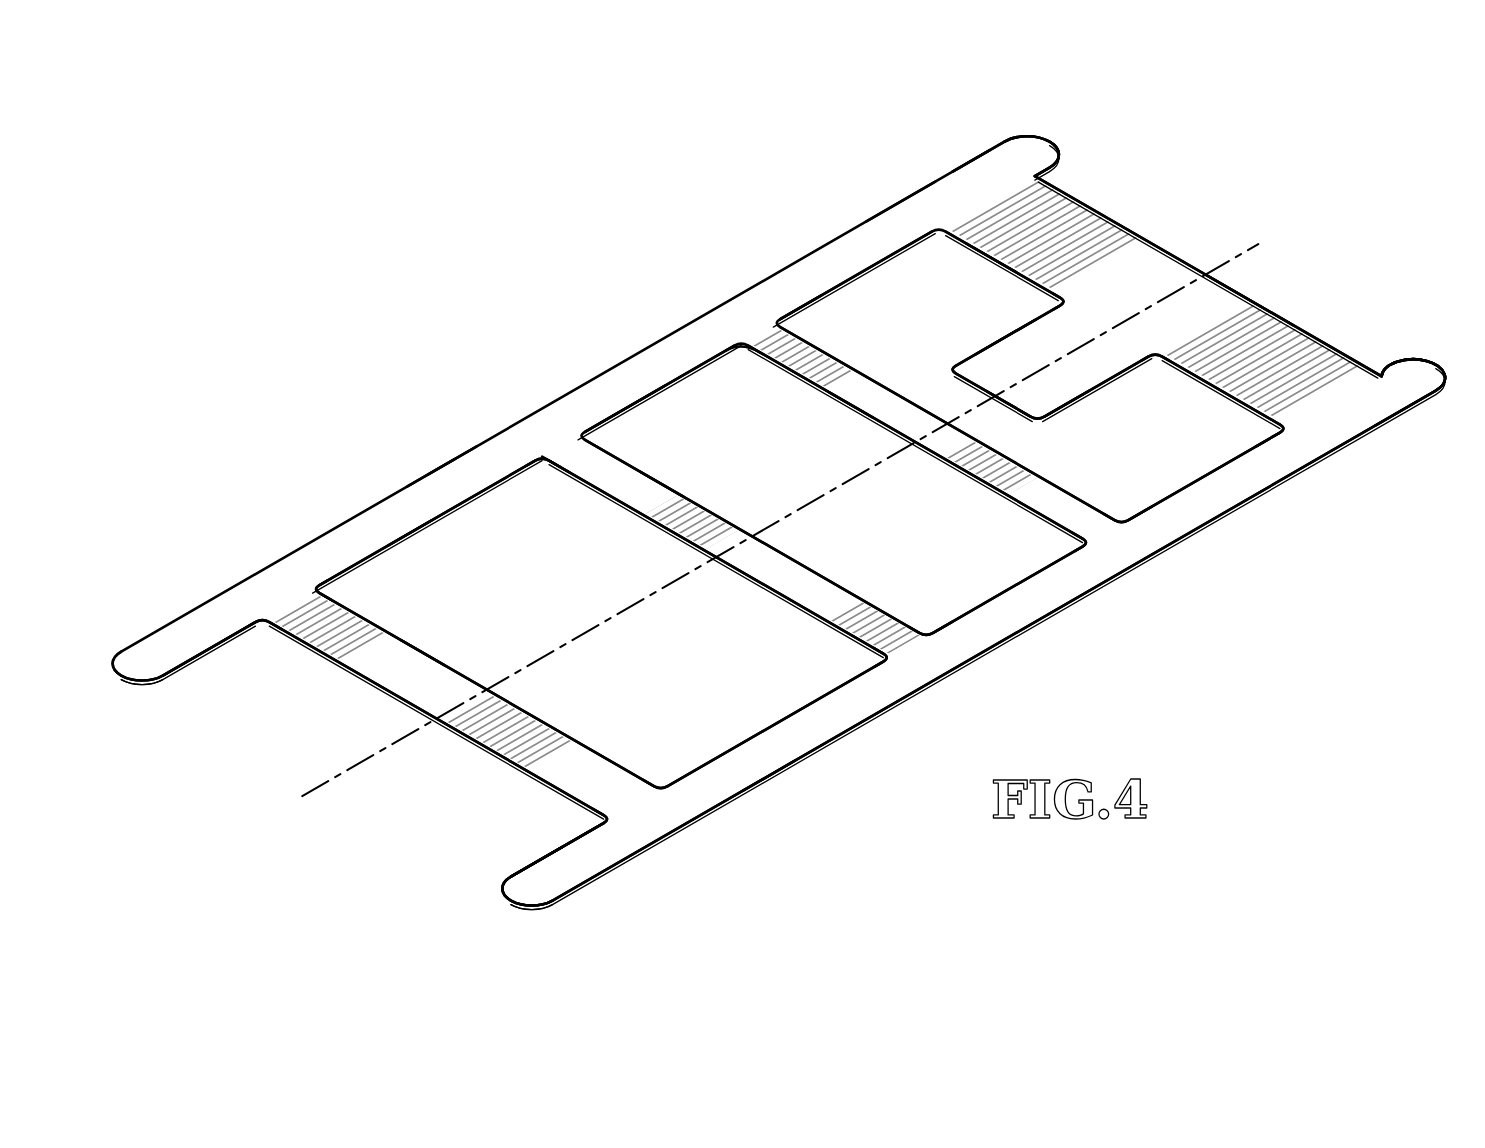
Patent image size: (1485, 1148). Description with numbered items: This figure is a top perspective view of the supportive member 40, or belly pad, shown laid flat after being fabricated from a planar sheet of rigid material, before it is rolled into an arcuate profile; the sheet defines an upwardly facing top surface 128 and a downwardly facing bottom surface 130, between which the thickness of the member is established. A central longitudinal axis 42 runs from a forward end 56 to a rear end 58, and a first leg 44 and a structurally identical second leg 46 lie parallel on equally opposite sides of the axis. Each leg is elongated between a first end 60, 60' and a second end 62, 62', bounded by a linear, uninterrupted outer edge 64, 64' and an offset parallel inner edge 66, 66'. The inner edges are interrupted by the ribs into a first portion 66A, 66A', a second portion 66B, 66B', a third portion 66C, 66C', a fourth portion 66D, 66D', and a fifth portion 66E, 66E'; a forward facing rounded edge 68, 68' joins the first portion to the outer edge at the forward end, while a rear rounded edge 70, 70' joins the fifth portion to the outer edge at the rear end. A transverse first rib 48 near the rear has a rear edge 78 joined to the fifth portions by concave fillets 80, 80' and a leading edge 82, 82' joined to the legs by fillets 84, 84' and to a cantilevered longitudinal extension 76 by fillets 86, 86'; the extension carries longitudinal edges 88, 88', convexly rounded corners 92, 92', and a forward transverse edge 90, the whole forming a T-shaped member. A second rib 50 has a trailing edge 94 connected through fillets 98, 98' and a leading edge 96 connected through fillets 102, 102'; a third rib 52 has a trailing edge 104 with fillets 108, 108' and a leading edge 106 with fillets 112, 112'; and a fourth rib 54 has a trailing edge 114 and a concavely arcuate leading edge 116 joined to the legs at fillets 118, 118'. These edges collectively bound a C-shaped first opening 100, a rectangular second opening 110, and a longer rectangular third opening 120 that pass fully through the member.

The supportive member 40 is at (495, 290).
The central longitudinal axis 42 is at (642, 586).
The first leg 44 is at (432, 474).
The second leg 46 is at (820, 742).
The transverse first rib 48 is at (1250, 300).
The transverse second rib 50 is at (833, 396).
The transverse third rib 52 is at (655, 484).
The transverse fourth rib 54 is at (410, 656).
The forward end 56 is at (350, 856).
The rear end 58 is at (1290, 250).
The first end 60 is at (131, 637).
The first end 60' is at (492, 881).
The second end 62 is at (1010, 134).
The second end 62' is at (1417, 406).
The outer edge 64 is at (422, 438).
The outer edge 64' is at (801, 788).
The inner edge 66 is at (209, 649).
The inner edge 66' is at (557, 850).
The first portion 66A is at (214, 678).
The second portion 66B is at (368, 523).
The third portion 66C is at (601, 381).
The fourth portion 66D is at (797, 269).
The fifth portion 66E is at (1113, 179).
The first portion 66A' is at (497, 843).
The second portion 66B' is at (772, 724).
The third portion 66C' is at (974, 586).
The fourth portion 66D' is at (1241, 496).
The fifth portion 66E' is at (1397, 353).
The forward facing rounded edge 68 is at (129, 708).
The forward rounded edge 68' is at (494, 913).
The rear rounded edge 70 is at (1033, 124).
The rearward rounded edge 70' is at (1423, 328).
The longitudinal extension 76 is at (987, 355).
The rear edge 78 is at (1155, 245).
The rounded concave fillet 80 is at (951, 149).
The concave rounded fillet 80' is at (1403, 442).
The leading edge 82 is at (986, 265).
The leading edge 82' is at (1221, 402).
The rounded fillet 84 is at (893, 192).
The rounded fillet 84' is at (1321, 475).
The rounded fillet 86 is at (1083, 298).
The rounded fillet 86' is at (1163, 385).
The longitudinally extending edge 88 is at (1008, 334).
The longitudinal edge 88' is at (1096, 399).
The forward transverse edge 90 is at (1007, 405).
The convexly rounded corner 92 is at (963, 387).
The convexly rounded corner 92' is at (1084, 434).
The trailing edge 94 is at (850, 368).
The leading edge 96 is at (870, 420).
The concavely rounded fillet 98 is at (708, 304).
The rounded fillet 98' is at (1169, 545).
The first opening 100 is at (858, 296).
The concavely rounded fillet 102 is at (645, 354).
The rounded fillet 102' is at (1138, 578).
The trailing edge 104 is at (690, 498).
The leading edge 106 is at (640, 512).
The concavely rounded fillet 108 is at (508, 416).
The rounded concave fillet 108' is at (984, 656).
The second opening 110 is at (700, 368).
The rounded concave fillet 112 is at (495, 431).
The rounded fillet 112' is at (942, 690).
The trailing edge 114 is at (530, 710).
The leading edge 116 is at (505, 755).
The rounded concave fillet 118 is at (245, 575).
The concave rounded fillet 118' is at (692, 836).
The third opening 120 is at (428, 545).
The top surface 128 is at (1019, 213).
The bottom surface 130 is at (992, 268).